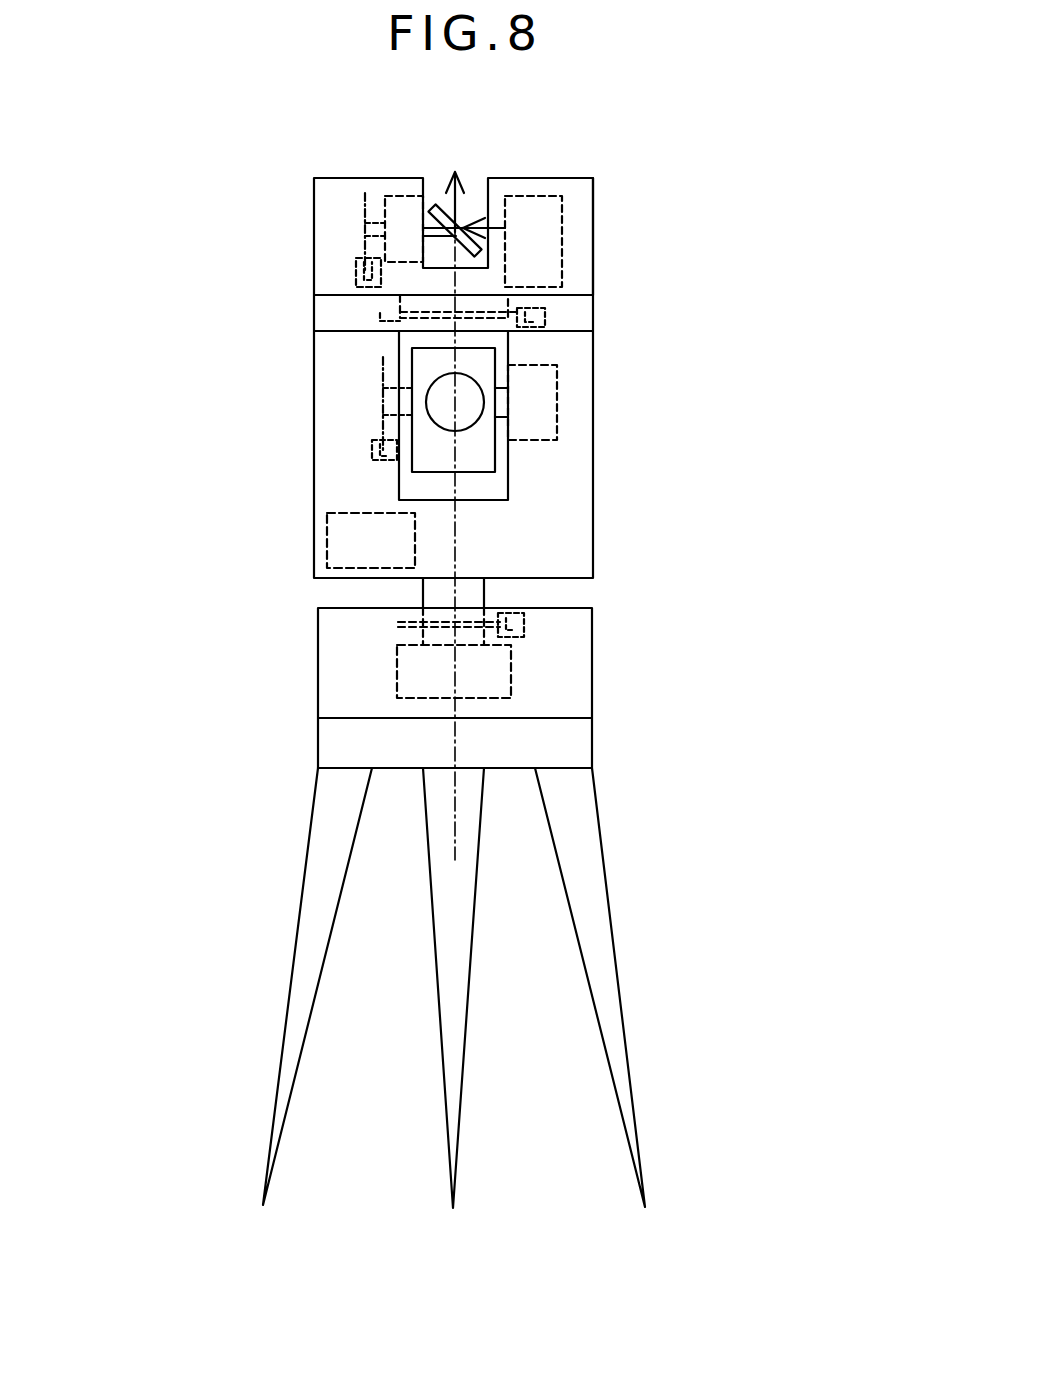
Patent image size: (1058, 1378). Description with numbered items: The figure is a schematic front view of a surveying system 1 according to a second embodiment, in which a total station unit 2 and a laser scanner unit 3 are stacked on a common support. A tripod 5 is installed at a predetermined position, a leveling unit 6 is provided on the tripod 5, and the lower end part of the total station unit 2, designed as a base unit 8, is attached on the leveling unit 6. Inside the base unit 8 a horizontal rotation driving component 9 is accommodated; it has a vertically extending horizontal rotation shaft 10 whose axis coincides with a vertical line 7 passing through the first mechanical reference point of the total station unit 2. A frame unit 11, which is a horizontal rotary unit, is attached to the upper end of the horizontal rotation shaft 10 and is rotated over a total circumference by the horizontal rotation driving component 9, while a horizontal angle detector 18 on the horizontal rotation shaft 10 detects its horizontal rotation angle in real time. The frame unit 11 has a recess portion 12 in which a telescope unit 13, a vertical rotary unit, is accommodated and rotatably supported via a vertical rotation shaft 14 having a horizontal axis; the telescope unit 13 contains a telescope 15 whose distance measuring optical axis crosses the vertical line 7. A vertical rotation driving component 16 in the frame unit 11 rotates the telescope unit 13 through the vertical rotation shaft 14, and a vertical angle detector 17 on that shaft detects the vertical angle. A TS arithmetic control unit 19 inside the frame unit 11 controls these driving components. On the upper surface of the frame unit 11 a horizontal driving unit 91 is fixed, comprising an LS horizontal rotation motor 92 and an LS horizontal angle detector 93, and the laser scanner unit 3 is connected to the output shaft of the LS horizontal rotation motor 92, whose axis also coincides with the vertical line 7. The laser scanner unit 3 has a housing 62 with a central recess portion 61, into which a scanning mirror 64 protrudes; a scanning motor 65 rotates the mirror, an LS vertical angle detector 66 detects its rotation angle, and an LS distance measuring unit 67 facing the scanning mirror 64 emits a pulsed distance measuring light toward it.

The surveying system 1 is at (189, 163).
The total station unit 2 is at (664, 512).
The laser scanner unit 3 is at (593, 205).
The tripod 5 is at (602, 845).
The leveling unit 6 is at (592, 740).
The vertical line 7 is at (455, 813).
The base unit 8 is at (592, 675).
The horizontal rotation driving component 9 is at (511, 665).
The horizontal rotation shaft 10 is at (484, 594).
The frame unit 11 is at (593, 452).
The recess portion 12 is at (483, 488).
The telescope unit 13 is at (497, 350).
The vertical rotation shaft 14 is at (497, 419).
The telescope 15 is at (430, 382).
The vertical rotation driving component 16 is at (557, 392).
The vertical angle detector 17 is at (366, 430).
The horizontal angle detector 18 is at (388, 632).
The TS arithmetic control unit 19 is at (327, 535).
The recess portion 61 is at (478, 200).
The housing 62 is at (593, 265).
The scanning mirror 64 is at (435, 205).
The scanning motor 65 is at (397, 196).
The LS vertical angle detector 66 is at (352, 268).
The LS distance measuring unit 67 is at (550, 196).
The horizontal driving unit 91 is at (593, 307).
The LS horizontal rotation motor 92 is at (380, 318).
The LS horizontal angle detector 93 is at (553, 313).